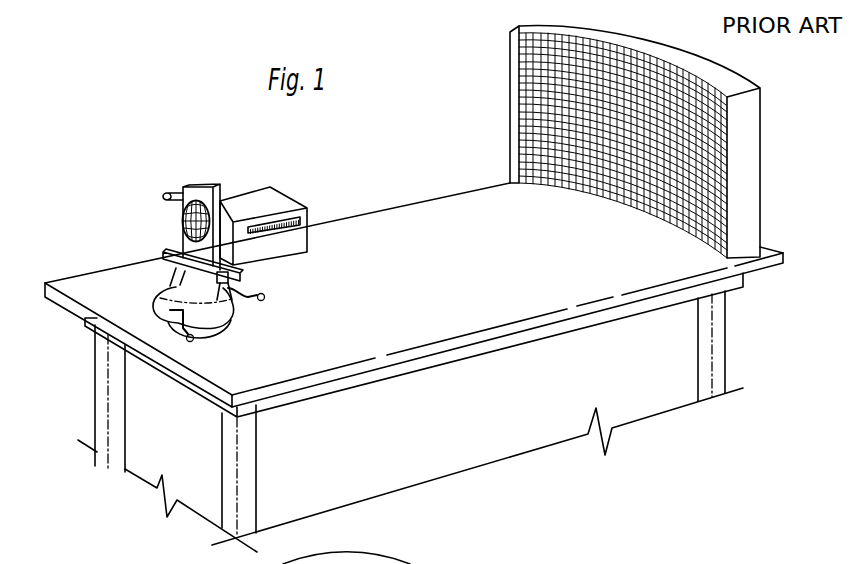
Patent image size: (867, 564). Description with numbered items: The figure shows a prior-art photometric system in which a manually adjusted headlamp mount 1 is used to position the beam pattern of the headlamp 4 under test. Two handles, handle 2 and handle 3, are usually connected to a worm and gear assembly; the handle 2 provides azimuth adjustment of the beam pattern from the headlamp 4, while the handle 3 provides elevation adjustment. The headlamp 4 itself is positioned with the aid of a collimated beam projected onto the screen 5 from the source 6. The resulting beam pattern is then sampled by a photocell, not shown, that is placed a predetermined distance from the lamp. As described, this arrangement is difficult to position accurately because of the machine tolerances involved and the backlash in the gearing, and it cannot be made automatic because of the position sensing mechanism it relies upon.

The base mount 1 is at (229, 278).
The handle 2 is at (194, 339).
The handle 3 is at (265, 299).
The headlamp 4 is at (183, 213).
The screen 5 is at (509, 120).
The source 6 is at (210, 188).